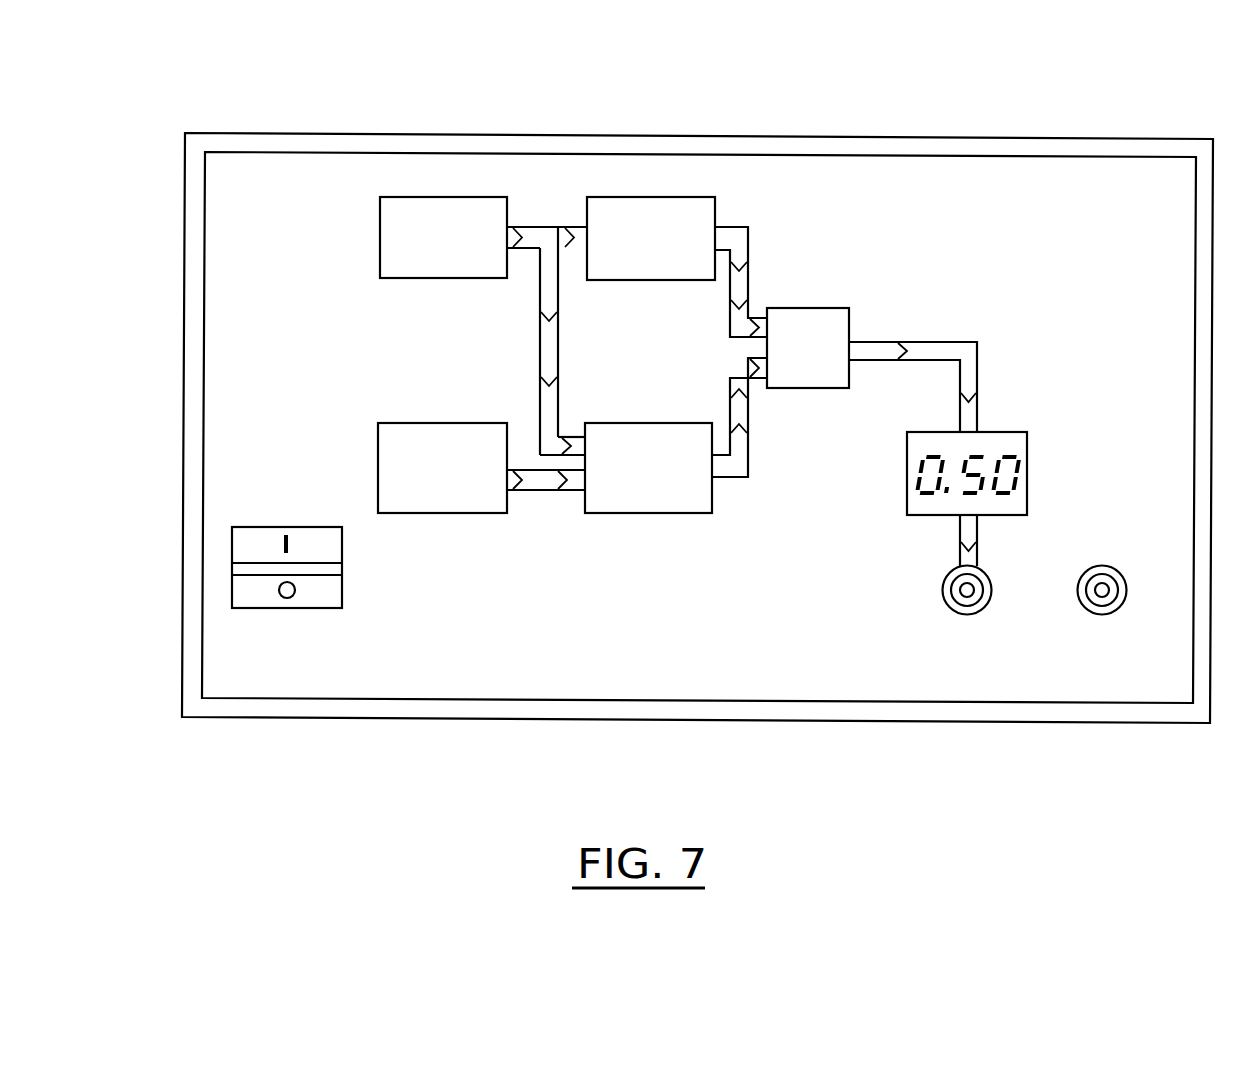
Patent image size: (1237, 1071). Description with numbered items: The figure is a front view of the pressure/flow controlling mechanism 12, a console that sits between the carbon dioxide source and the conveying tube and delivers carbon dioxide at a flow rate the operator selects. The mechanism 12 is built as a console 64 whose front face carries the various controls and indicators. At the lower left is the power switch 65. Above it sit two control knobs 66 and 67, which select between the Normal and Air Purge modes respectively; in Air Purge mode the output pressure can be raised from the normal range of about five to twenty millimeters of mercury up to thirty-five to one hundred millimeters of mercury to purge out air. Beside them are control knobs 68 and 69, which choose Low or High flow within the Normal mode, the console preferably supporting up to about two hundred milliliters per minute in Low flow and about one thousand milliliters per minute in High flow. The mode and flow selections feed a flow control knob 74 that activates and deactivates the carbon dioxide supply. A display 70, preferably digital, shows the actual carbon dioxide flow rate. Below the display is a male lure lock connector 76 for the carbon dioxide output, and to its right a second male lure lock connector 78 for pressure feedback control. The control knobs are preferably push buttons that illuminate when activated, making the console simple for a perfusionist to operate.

The pressure/flow controlling mechanism 12 is at (1022, 116).
The console 64 is at (267, 152).
The power switch 65 is at (248, 598).
The control knob 66 is at (410, 197).
The control knob 67 is at (440, 513).
The control knob 68 is at (622, 197).
The control knob 69 is at (648, 516).
The display 70 is at (930, 520).
The flow control knob 74 is at (810, 308).
The male lure lock connector 76 is at (952, 610).
The male lure lock connector 78 is at (1083, 605).